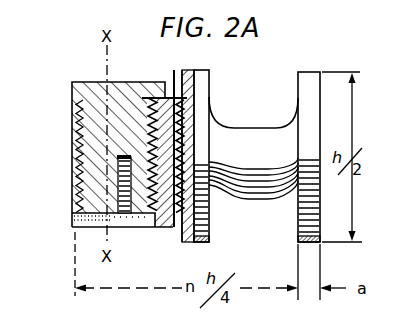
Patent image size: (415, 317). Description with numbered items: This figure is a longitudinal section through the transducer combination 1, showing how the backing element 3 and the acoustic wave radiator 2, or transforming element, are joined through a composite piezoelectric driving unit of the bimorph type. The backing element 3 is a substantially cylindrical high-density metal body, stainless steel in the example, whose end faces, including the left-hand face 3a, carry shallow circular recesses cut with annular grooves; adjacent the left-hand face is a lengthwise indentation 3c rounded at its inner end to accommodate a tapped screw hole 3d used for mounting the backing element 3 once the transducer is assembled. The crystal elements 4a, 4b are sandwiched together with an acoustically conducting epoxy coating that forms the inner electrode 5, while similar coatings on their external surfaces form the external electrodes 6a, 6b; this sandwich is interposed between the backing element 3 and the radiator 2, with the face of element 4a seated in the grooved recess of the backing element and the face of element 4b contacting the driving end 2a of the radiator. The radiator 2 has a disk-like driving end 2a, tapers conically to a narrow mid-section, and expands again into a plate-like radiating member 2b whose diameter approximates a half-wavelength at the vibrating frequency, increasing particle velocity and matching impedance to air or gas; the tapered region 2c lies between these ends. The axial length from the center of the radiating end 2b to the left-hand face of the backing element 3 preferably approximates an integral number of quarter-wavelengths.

The combination 1 is at (65, 103).
The acoustic wave radiator 2 is at (281, 203).
The driving end 2a is at (206, 70).
The radiating member 2b is at (312, 80).
The bellows fold 2c is at (257, 140).
The backing element 3 is at (66, 172).
The left-hand face 3a is at (72, 139).
The lengthwise indentation 3c is at (73, 215).
The screw hole 3d is at (129, 203).
The piezoelectric element 4a is at (171, 204).
The piezoelectric element 4b is at (177, 203).
The inner electrode 5 is at (174, 70).
The external electrode 6a is at (158, 97).
The external electrode 6b is at (184, 101).